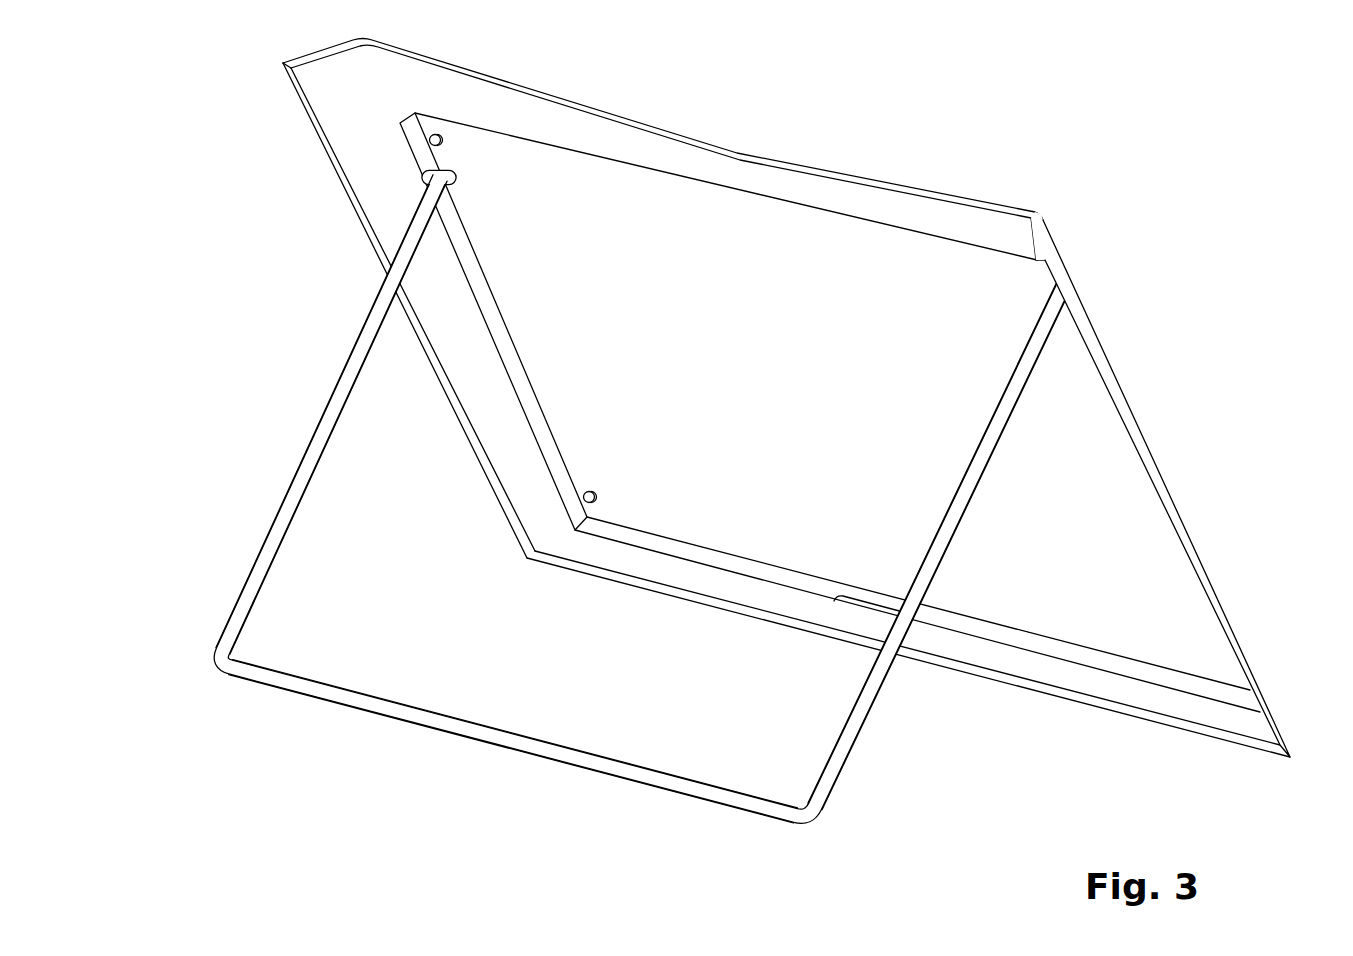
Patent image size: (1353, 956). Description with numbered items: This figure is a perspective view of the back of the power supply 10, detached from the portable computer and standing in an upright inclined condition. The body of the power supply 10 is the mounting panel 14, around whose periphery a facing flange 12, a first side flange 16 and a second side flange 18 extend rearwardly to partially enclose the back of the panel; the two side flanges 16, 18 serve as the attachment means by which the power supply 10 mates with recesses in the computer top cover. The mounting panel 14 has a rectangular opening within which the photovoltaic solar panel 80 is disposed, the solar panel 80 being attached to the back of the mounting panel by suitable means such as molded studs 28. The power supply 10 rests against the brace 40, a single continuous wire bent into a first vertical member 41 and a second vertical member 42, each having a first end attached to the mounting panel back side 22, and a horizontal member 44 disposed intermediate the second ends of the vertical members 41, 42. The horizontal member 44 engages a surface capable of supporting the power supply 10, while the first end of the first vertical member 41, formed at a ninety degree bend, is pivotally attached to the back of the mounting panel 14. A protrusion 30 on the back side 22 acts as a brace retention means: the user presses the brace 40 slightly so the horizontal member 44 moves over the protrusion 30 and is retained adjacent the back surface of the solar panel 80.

The power supply 10 is at (770, 445).
The facing flange 12 is at (1121, 716).
The mounting panel 14 is at (968, 197).
The first side flange 16 is at (1164, 482).
The second side flange 18 is at (352, 150).
The mounting panel back side 22 is at (565, 133).
The molded studs 28 is at (440, 138).
The protrusion 30 is at (857, 600).
The brace 40 is at (644, 513).
The first vertical member 41 is at (290, 524).
The second vertical member 42 is at (863, 735).
The horizontal member 44 is at (522, 735).
The photovoltaic solar panel 80 is at (790, 375).